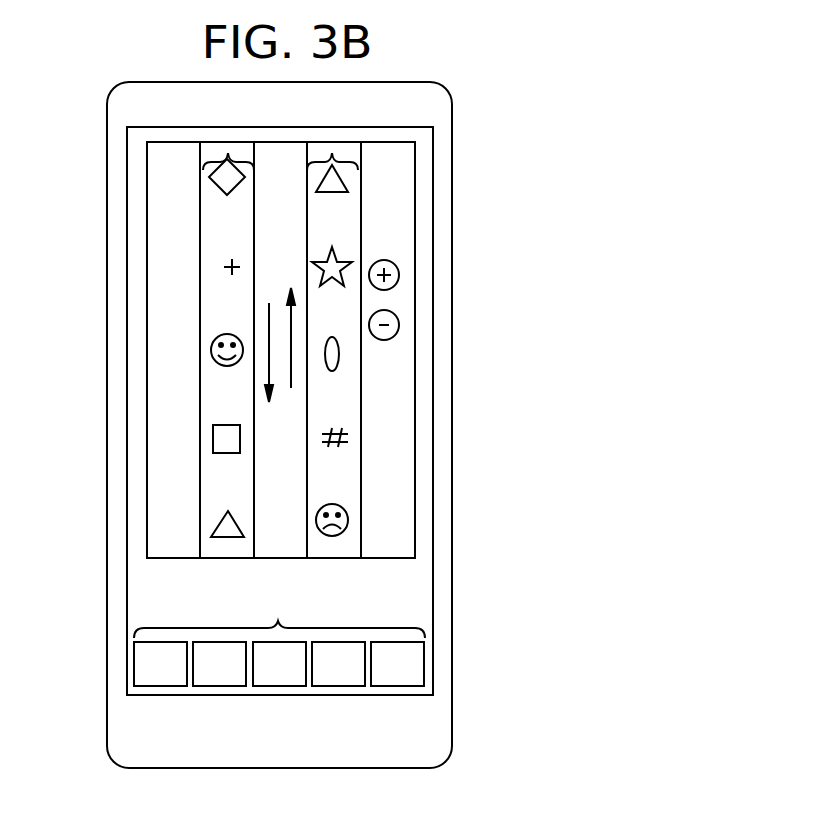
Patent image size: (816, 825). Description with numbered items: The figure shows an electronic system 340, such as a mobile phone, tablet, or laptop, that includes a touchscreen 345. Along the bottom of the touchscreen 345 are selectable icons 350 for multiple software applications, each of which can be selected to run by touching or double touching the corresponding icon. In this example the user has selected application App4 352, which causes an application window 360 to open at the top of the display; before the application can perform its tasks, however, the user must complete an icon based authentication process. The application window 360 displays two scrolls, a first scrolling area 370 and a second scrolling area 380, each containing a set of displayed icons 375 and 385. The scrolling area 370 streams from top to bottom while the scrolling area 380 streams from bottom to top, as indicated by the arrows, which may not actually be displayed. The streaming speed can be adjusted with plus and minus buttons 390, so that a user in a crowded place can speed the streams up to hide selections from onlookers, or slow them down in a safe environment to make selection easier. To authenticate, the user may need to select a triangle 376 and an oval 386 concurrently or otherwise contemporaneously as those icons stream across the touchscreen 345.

The electronic system 340 is at (452, 158).
The touchscreen 345 is at (350, 127).
The scrolling area 370 is at (200, 250).
The displayed icons 375 is at (228, 153).
The triangle 376 is at (213, 523).
The displayed icons 385 is at (332, 153).
The oval 386 is at (341, 354).
The scrolling area 380 is at (362, 472).
The application window 360 is at (372, 560).
The plus and minus buttons 390 is at (395, 313).
The selectable icons 350 is at (279, 659).
The application App4 352 is at (332, 686).